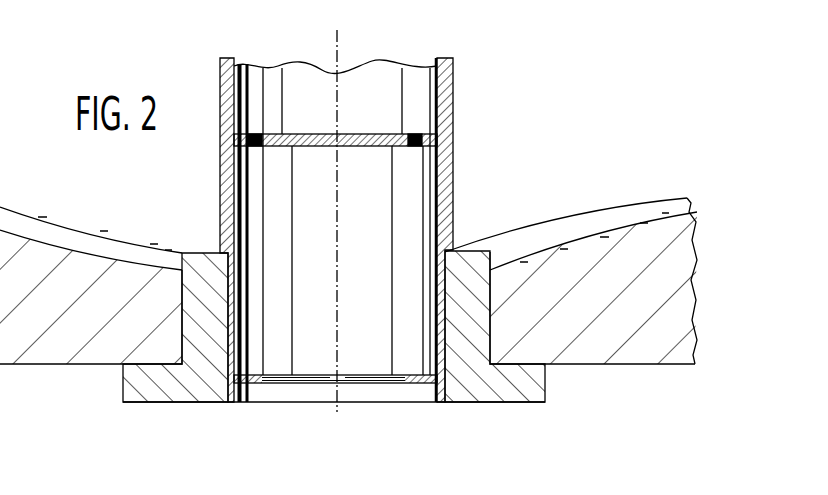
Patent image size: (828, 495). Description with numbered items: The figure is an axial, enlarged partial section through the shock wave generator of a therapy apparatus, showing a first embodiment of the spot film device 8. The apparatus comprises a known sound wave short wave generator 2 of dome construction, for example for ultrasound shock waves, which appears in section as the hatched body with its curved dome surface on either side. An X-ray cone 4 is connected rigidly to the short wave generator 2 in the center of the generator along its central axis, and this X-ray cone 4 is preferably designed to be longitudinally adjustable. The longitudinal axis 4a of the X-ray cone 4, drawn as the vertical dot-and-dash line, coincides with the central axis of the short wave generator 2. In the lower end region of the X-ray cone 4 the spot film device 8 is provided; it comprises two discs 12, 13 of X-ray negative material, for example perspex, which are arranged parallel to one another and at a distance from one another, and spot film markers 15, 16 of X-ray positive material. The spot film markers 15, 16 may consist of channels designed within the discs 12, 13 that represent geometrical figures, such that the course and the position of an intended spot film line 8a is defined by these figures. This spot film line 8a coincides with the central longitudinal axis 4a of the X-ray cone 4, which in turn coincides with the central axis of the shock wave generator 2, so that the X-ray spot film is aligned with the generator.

The short wave generator 2 is at (562, 284).
The X-ray cone 4 is at (448, 75).
The longitudinal axis 4a is at (340, 62).
The spot film device 8 is at (377, 116).
The spot film line 8a is at (345, 233).
The disc 12 is at (320, 146).
The disc 13 is at (253, 388).
The spot film marker 15 is at (268, 135).
The spot film marker 16 is at (370, 384).